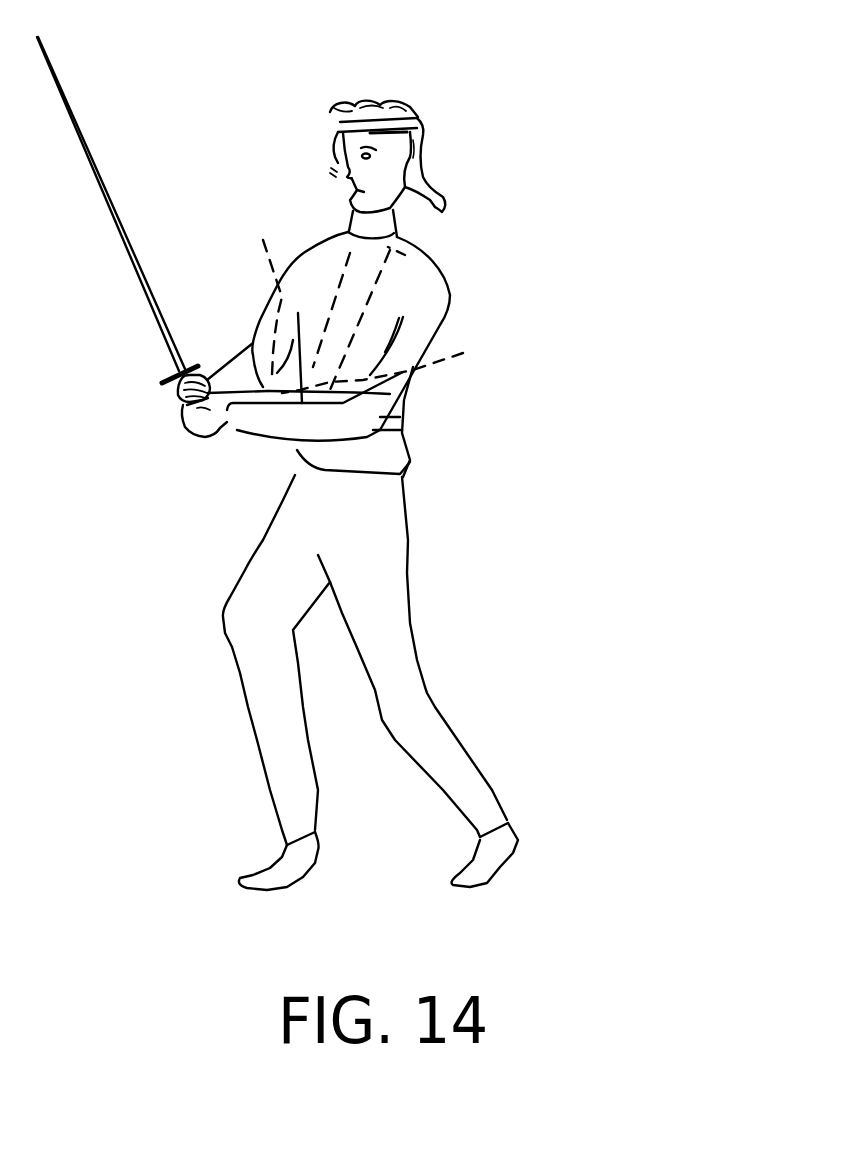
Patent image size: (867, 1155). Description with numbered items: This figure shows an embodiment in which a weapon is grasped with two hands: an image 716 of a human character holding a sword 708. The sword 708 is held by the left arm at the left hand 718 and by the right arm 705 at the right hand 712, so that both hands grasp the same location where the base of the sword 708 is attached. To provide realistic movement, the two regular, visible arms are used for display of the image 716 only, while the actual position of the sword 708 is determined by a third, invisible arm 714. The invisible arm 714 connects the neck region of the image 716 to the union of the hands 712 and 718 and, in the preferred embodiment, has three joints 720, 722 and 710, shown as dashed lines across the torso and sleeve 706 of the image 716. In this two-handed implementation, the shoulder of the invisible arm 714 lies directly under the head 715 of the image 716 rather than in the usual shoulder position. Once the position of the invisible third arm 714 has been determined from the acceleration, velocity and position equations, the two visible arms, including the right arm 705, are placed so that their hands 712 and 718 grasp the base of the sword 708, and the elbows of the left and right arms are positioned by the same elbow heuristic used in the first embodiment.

The right arm 705 is at (407, 452).
The sleeve 706 is at (263, 385).
The sword 708 is at (70, 95).
The joint 710 is at (430, 257).
The right hand 712 is at (193, 442).
The invisible arm 714 is at (463, 353).
The head 715 is at (428, 142).
The image 716 is at (165, 705).
The left hand 718 is at (176, 385).
The joint 720 is at (390, 394).
The joint 722 is at (259, 290).